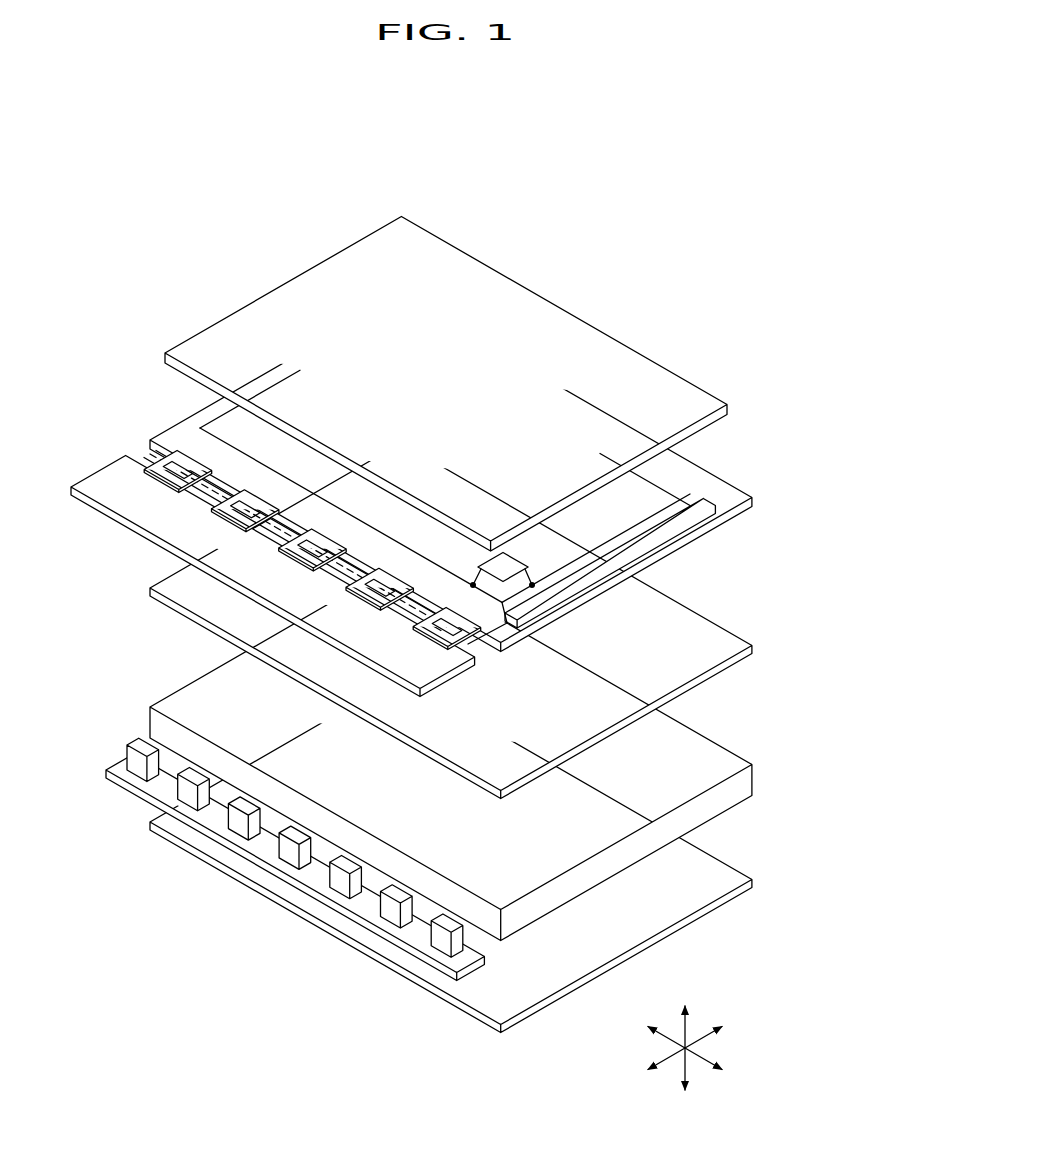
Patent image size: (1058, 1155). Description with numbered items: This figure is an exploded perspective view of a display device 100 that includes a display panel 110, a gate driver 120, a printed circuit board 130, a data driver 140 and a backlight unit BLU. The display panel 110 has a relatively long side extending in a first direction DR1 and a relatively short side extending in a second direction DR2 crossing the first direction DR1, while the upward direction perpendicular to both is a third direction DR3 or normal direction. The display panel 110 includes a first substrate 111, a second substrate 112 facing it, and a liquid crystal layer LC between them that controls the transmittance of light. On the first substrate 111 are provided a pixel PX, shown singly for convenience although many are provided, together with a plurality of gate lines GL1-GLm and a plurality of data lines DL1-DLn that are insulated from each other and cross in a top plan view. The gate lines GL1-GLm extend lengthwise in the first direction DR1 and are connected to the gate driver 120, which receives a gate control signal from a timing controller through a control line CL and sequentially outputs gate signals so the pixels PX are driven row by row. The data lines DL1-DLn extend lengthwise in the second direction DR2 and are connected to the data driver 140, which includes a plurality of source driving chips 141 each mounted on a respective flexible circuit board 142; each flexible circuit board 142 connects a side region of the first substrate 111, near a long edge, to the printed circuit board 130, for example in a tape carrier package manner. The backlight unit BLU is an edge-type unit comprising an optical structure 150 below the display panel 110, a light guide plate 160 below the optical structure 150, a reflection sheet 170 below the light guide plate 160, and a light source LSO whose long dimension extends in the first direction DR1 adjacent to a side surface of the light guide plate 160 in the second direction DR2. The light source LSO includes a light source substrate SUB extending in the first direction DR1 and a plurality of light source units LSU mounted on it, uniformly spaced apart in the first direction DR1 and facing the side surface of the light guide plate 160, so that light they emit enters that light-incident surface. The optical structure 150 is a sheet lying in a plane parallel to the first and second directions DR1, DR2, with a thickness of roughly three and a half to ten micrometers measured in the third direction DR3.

The display device 100 is at (634, 250).
The display panel 110 is at (458, 441).
The first substrate 111 is at (745, 499).
The second substrate 112 is at (745, 406).
The liquid crystal layer LC is at (728, 464).
The gate driver 120 is at (673, 522).
The printed circuit board 130 is at (100, 483).
The data driver 140 is at (258, 517).
The source driving chip 141 is at (150, 478).
The flexible circuit board 142 is at (170, 487).
The first gate line GL1 is at (410, 549).
The m-th gate line GLm is at (655, 484).
The first data line DL1 is at (603, 542).
The n-th data line DLn is at (228, 421).
The pixel PX is at (502, 567).
The control line CL is at (510, 622).
The backlight unit BLU is at (496, 738).
The optical structure 150 is at (745, 646).
The light guide plate 160 is at (745, 768).
The reflection sheet 170 is at (745, 883).
The light source LSO is at (496, 810).
The light source unit LSU is at (238, 818).
The light source substrate SUB is at (312, 890).
The first direction DR1 is at (707, 1059).
The second direction DR2 is at (707, 1042).
The third direction DR3 is at (681, 1035).